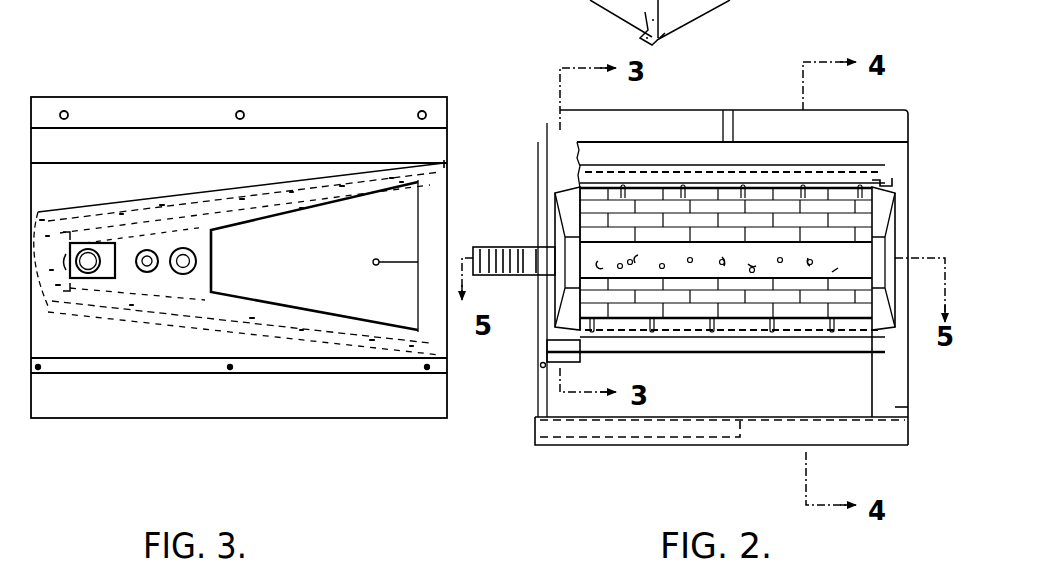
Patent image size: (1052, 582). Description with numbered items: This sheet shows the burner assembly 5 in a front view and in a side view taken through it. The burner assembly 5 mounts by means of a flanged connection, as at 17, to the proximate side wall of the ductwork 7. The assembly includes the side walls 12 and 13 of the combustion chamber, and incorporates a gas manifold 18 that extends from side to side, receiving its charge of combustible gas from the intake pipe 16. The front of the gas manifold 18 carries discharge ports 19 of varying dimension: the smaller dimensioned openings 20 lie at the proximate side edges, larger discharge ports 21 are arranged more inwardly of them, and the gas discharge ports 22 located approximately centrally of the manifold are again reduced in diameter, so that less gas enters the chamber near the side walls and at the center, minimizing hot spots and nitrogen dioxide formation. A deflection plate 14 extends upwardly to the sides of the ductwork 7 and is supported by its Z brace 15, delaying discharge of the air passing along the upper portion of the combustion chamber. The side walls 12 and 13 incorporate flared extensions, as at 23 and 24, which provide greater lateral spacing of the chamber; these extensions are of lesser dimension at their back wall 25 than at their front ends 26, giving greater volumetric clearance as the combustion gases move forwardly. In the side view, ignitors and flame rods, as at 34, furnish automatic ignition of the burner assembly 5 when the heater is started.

In FIG. 3, the burner assembly 5 is at (327, 78).
In FIG. 2, the ductwork 7 is at (740, 103).
In FIG. 3, the side wall 12 is at (115, 336).
In FIG. 2, the side wall 12 is at (580, 345).
In FIG. 2, the side wall 13 is at (872, 340).
In FIG. 2, the deflection plate 14 is at (660, 165).
In FIG. 2, the Z brace 15 is at (735, 130).
In FIG. 3, the intake pipe 16 is at (90, 278).
In FIG. 2, the intake pipe 16 is at (520, 246).
In FIG. 2, the flanged connection 17 is at (538, 395).
In FIG. 3, the gas manifold 18 is at (88, 244).
In FIG. 2, the gas manifold 18 is at (856, 262).
In FIG. 2, the discharge ports 19 is at (702, 261).
In FIG. 2, the smaller dimensioned openings 20 is at (714, 264).
In FIG. 2, the discharge ports 21 is at (748, 259).
In FIG. 2, the gas discharge ports 22 is at (751, 255).
In FIG. 3, the flared extension 23 is at (307, 302).
In FIG. 2, the flared extension 23 is at (552, 188).
In FIG. 2, the flared extension 24 is at (890, 180).
In FIG. 3, the back wall 25 is at (203, 280).
In FIG. 3, the front ends 26 is at (424, 229).
In FIG. 3, the ignitors and flame rods 34 is at (152, 250).